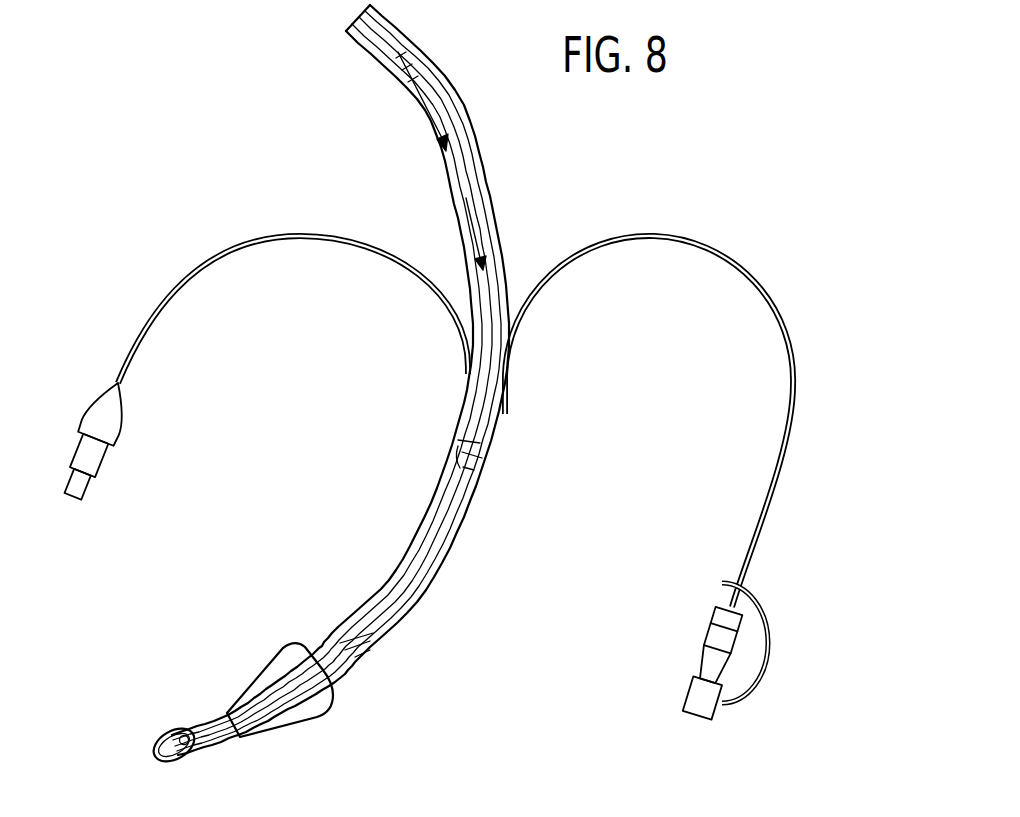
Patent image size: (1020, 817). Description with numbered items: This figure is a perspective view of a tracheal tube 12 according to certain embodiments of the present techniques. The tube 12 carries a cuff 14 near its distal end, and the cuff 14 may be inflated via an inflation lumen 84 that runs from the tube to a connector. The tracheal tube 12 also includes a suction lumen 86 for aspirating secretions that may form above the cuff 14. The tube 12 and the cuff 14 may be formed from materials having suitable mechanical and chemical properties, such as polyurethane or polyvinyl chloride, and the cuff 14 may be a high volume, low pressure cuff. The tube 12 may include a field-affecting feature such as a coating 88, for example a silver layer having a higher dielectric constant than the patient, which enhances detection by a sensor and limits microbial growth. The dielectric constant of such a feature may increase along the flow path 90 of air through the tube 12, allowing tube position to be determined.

The tracheal tube 12 is at (133, 155).
The cuff 14 is at (297, 645).
The inflation lumen 84 is at (127, 347).
The suction lumen 86 is at (686, 234).
The coating 88 is at (450, 186).
The flow path 90 is at (478, 226).